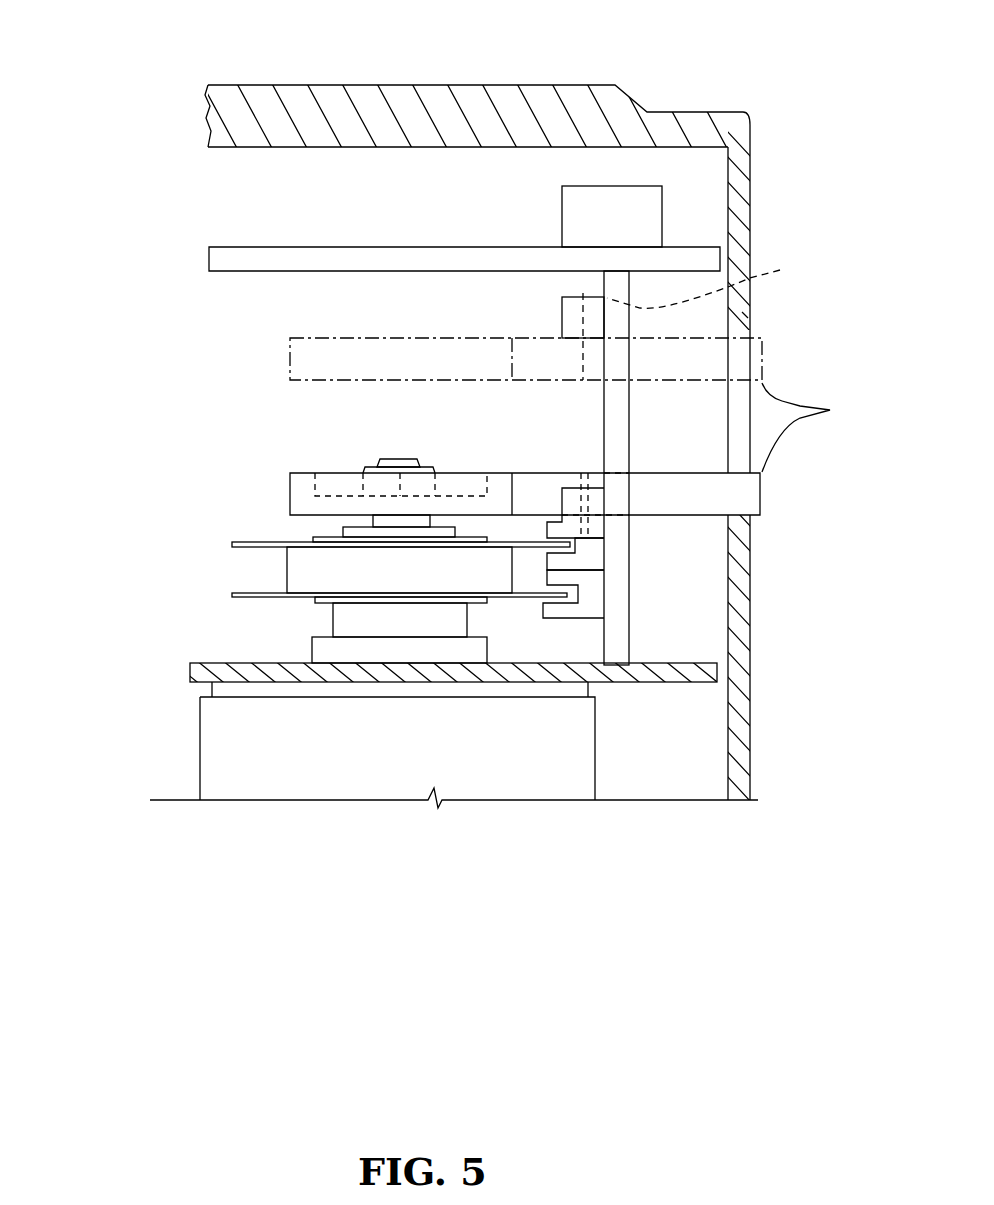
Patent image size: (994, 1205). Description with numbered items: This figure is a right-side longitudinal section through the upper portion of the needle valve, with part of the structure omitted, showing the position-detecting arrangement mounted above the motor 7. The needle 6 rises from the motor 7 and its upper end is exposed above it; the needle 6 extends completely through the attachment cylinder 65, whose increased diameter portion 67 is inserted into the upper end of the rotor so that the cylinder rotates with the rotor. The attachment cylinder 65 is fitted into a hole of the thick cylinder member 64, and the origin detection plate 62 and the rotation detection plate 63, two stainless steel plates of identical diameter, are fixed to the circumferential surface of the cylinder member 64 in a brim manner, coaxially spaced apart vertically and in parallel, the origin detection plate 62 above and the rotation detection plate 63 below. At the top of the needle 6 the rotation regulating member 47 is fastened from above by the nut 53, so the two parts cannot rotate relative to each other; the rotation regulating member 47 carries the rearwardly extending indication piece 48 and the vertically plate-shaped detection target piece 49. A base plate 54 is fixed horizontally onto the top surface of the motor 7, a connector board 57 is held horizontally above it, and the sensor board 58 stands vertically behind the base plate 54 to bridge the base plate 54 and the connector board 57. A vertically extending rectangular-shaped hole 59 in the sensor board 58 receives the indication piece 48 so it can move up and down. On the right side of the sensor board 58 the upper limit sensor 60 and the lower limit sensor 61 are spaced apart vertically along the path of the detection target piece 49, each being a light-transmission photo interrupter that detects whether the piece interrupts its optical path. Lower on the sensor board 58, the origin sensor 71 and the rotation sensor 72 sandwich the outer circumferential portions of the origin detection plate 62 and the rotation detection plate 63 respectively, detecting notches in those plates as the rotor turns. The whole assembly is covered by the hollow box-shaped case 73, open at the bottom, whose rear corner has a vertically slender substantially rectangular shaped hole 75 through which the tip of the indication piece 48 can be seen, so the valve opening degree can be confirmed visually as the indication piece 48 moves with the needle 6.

The needle 6 is at (387, 454).
The motor 7 is at (186, 753).
The rotation regulating member 47 is at (280, 352).
The indication piece 48 is at (821, 427).
The detection target piece 49 is at (578, 477).
The nut 53 is at (427, 467).
The base plate 54 is at (720, 678).
The connector board 57 is at (697, 257).
The sensor board 58 is at (622, 362).
The rectangular-shaped hole 59 is at (709, 311).
The upper limit sensor 60 is at (562, 298).
The lower limit sensor 61 is at (562, 494).
The origin detection plate 62 is at (216, 539).
The rotation detection plate 63 is at (212, 596).
The cylinder member 64 is at (288, 569).
The attachment cylinder 65 is at (335, 617).
The increased diameter portion 67 is at (284, 672).
The origin sensor 71 is at (595, 553).
The rotation sensor 72 is at (592, 600).
The case 73 is at (765, 161).
The substantially rectangular shaped hole 75 is at (745, 308).